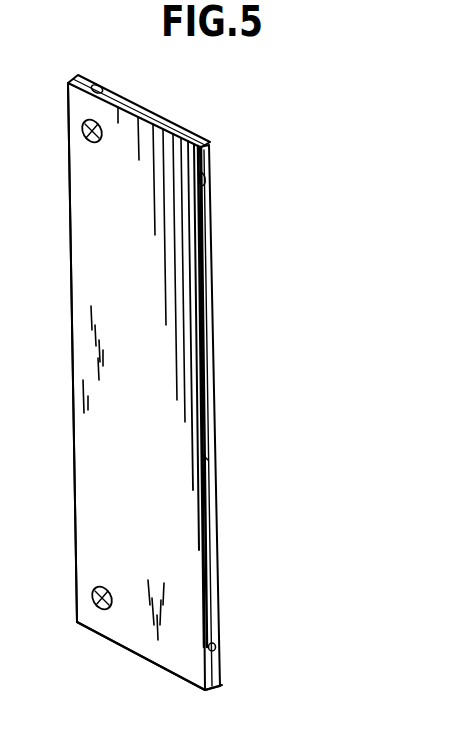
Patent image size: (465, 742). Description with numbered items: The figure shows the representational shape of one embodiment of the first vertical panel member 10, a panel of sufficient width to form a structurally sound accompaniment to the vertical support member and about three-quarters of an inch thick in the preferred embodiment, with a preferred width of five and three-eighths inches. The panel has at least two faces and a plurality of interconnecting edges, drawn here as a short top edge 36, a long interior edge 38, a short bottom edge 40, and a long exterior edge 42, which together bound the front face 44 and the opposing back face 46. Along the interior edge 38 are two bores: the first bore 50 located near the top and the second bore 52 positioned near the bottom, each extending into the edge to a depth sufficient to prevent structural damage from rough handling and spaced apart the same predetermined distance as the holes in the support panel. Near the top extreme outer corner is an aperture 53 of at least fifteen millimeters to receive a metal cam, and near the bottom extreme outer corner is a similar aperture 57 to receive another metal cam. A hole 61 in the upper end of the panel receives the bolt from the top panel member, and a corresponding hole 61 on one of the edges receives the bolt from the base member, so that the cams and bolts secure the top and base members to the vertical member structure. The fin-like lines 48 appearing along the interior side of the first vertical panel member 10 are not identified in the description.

The first vertical panel member 10 is at (59, 78).
The short top edge 36 is at (154, 116).
The long interior edge 38 is at (207, 336).
The short bottom edge 40 is at (168, 670).
The long exterior edge 42 is at (70, 288).
The front face 44 is at (98, 442).
The back face 46 is at (216, 461).
The fins 48 is at (200, 250).
The first bore 50 is at (209, 184).
The second bore 52 is at (216, 648).
The aperture 53 is at (82, 133).
The aperture 57 is at (94, 594).
The hole 61 is at (102, 86).